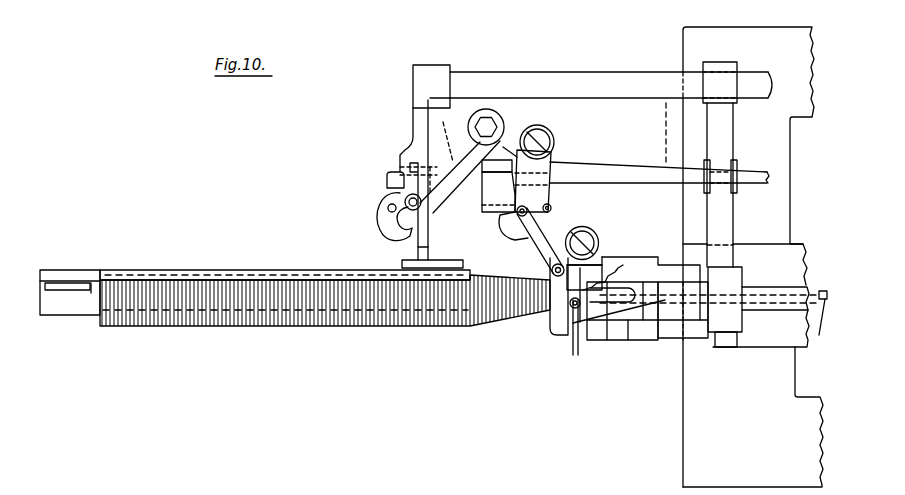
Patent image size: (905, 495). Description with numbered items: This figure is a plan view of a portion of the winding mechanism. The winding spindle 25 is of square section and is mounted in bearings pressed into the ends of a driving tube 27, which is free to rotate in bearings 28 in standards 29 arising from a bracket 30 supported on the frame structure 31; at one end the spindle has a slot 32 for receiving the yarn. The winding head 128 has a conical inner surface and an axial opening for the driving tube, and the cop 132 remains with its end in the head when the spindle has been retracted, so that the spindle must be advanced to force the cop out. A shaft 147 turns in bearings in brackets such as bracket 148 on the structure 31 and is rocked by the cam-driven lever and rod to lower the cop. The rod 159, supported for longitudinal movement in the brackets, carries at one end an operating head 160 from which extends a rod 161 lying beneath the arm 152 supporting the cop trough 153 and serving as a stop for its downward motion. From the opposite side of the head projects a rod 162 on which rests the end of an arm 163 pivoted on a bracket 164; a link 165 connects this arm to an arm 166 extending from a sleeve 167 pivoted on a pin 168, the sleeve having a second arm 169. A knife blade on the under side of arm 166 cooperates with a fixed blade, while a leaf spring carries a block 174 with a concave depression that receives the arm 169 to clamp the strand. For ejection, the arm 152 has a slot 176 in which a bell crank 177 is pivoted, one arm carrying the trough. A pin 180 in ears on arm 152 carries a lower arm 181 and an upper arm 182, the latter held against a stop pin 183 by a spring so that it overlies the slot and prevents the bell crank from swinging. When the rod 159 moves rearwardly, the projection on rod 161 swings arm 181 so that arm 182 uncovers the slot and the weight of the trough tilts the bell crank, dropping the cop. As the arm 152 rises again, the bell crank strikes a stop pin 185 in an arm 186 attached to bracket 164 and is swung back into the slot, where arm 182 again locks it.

The winding spindle 25 is at (627, 340).
The driving tube 27 is at (765, 288).
The bearings 28 is at (675, 312).
The standards 29 is at (728, 325).
The bracket 30 is at (777, 338).
The frame structure 31 is at (690, 448).
The slot 32 is at (585, 340).
The winding head 128 is at (638, 282).
The cop 132 is at (215, 320).
The shaft 147 is at (566, 70).
The bracket 148 is at (724, 62).
The arm 152 is at (413, 115).
The trough 153 is at (248, 268).
The rod 159 is at (637, 183).
The operating head 160 is at (497, 167).
The rod 161 is at (450, 166).
The rod 162 is at (551, 209).
The arm 163 is at (515, 240).
The bracket 164 is at (607, 117).
The link 165 is at (543, 247).
The arm 166 is at (550, 322).
The sleeve 167 is at (583, 228).
The pin 168 is at (596, 243).
The arm 169 is at (567, 343).
The block 174 is at (595, 342).
The slot 176 is at (428, 232).
The bell crank 177 is at (418, 252).
The pin 180 is at (388, 208).
The arm 181 is at (388, 175).
The arm 182 is at (380, 225).
The stop pin 183 is at (421, 208).
The stop pin 185 is at (423, 202).
The arm 186 is at (453, 130).